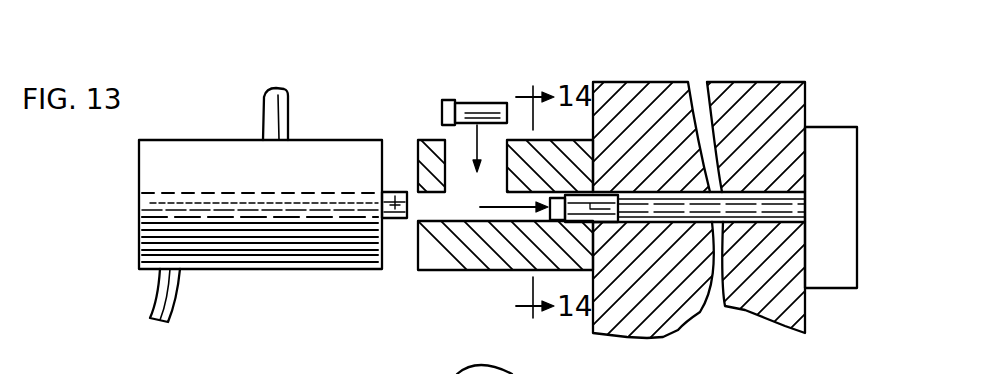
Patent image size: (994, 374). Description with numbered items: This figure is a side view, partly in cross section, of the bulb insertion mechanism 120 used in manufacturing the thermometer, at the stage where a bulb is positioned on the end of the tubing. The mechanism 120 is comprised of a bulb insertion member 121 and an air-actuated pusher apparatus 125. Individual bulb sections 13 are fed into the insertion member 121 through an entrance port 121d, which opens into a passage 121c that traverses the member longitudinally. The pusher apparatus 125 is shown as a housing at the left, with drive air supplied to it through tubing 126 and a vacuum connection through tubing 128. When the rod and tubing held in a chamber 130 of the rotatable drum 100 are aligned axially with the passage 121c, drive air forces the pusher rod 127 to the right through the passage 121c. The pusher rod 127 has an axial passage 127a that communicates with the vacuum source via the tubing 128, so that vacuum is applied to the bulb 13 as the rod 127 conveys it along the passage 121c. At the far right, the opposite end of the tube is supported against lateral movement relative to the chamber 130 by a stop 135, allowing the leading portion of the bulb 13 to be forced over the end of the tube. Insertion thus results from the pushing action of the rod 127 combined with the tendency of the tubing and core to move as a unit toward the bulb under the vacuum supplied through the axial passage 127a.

The bulb section 13 is at (468, 106).
The rotatable drum 100 is at (767, 305).
The bulb insertion mechanism 120 is at (393, 85).
The bulb insertion member 121 is at (480, 262).
The passage 121c is at (431, 212).
The entrance port 121d is at (458, 158).
The air-actuated pusher apparatus 125 is at (270, 257).
The tubing 126 is at (289, 120).
The pusher rod 127 is at (400, 221).
The axial passage 127a is at (397, 190).
The tubing 128 is at (161, 293).
The chamber 130 is at (668, 223).
The stop 135 is at (847, 218).